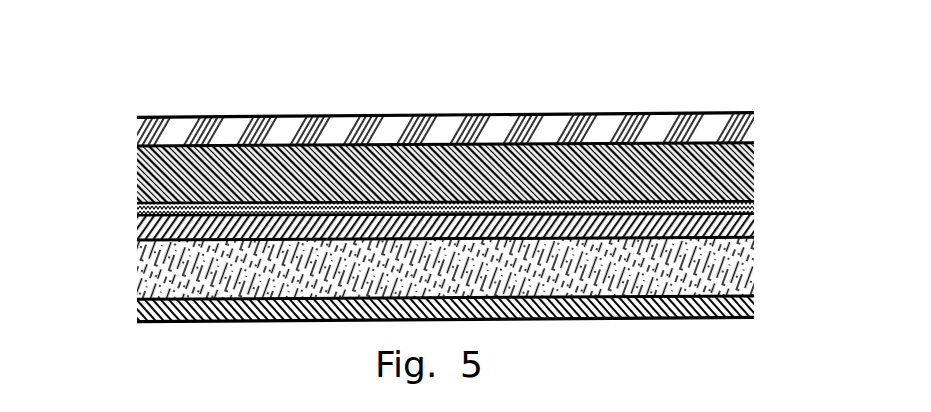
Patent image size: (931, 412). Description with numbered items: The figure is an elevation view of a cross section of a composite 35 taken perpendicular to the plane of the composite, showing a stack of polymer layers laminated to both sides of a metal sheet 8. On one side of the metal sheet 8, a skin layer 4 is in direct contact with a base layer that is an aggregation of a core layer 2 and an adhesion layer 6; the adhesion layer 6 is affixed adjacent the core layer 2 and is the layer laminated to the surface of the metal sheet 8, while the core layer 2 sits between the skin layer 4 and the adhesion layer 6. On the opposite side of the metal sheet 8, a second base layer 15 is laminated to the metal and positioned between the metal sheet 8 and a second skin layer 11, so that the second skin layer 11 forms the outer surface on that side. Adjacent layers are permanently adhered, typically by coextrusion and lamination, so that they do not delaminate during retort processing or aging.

The core layer 2 is at (753, 276).
The skin layer 4 is at (753, 303).
The adhesion layer 6 is at (753, 228).
The metal sheet 8 is at (753, 206).
The second skin layer 11 is at (153, 130).
The second base layer 15 is at (153, 179).
The composite 35 is at (257, 102).